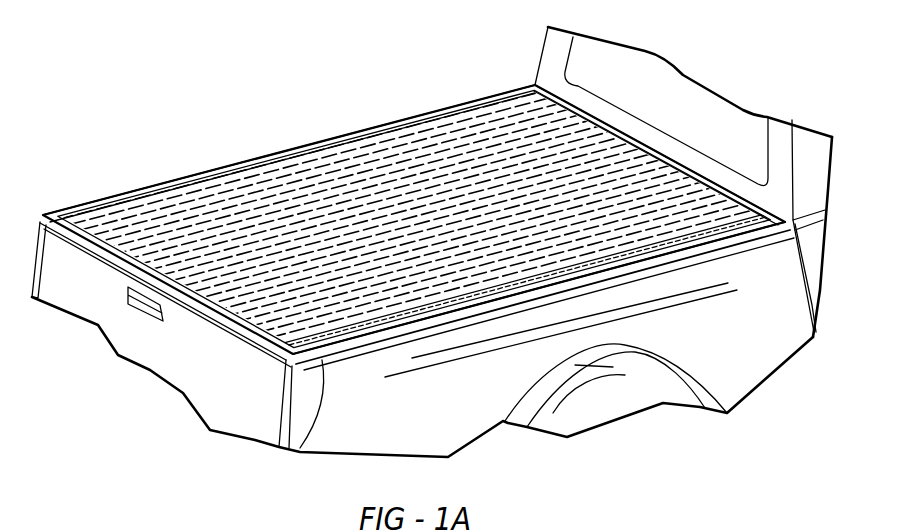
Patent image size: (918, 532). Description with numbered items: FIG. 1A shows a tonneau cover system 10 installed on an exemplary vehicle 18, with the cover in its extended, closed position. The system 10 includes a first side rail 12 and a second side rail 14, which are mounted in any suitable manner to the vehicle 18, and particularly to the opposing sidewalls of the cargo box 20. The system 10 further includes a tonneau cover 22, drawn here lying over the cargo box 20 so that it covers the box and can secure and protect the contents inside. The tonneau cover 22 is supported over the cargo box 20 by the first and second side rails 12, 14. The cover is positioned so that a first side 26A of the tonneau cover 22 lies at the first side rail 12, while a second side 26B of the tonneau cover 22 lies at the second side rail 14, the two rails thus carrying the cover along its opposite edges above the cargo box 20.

The tonneau cover system 10 is at (139, 92).
The first side rail 12 is at (128, 192).
The second side rail 14 is at (733, 228).
The vehicle 18 is at (553, 55).
The cargo box 20 is at (447, 106).
The tonneau cover 22 is at (372, 180).
The first side of the tonneau cover 26A is at (255, 160).
The second side of the tonneau cover 26B is at (520, 288).